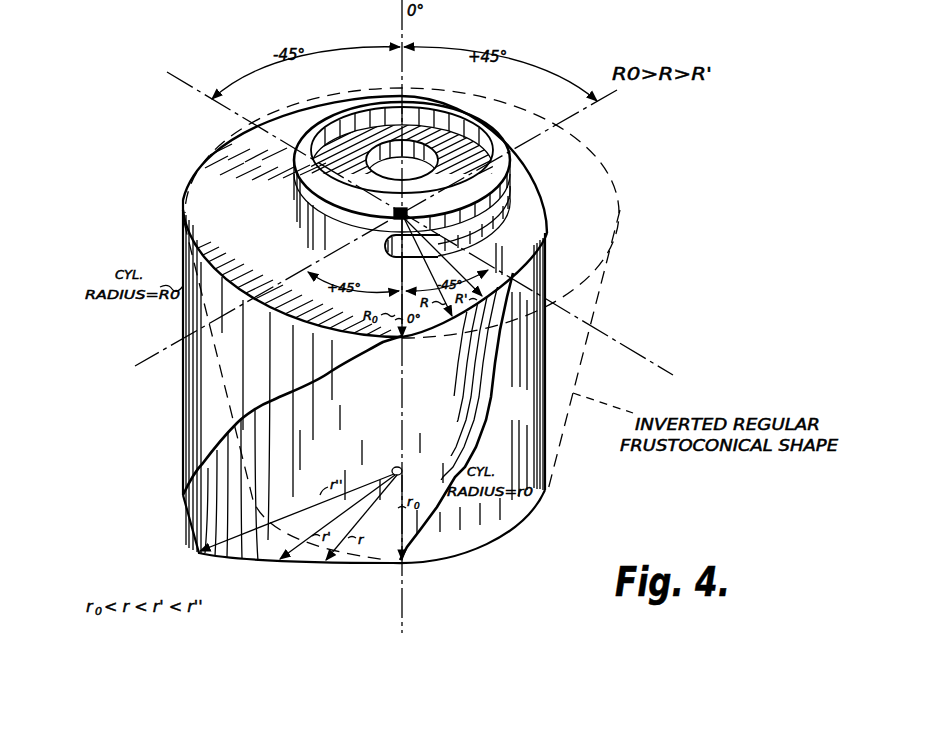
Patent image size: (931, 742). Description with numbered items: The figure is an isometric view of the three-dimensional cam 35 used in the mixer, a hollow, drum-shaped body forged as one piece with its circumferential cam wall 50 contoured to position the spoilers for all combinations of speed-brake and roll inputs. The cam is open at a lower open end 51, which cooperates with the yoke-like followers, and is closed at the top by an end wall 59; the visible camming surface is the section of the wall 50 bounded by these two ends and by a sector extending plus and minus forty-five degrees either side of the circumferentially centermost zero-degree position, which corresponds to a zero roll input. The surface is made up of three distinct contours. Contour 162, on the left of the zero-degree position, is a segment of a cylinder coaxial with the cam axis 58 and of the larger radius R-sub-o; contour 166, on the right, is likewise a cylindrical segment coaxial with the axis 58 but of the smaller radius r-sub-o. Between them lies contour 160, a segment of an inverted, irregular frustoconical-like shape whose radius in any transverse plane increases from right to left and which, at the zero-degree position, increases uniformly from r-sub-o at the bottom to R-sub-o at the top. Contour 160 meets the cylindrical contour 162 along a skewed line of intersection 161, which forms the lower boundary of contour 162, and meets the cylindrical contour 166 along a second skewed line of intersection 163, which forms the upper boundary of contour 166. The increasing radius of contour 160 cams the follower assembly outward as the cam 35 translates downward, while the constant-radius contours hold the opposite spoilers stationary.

The cam 35 is at (190, 167).
The circumferential cam wall 50 is at (183, 452).
The lower open end 51 is at (433, 562).
The cam axis 58 is at (437, 160).
The upper closed end wall 59 is at (207, 201).
The contour 160 is at (400, 469).
The skewed line of intersection 161 is at (300, 395).
The contour 162 is at (277, 408).
The skewed line of intersection 163 is at (490, 367).
The contour 166 is at (512, 371).